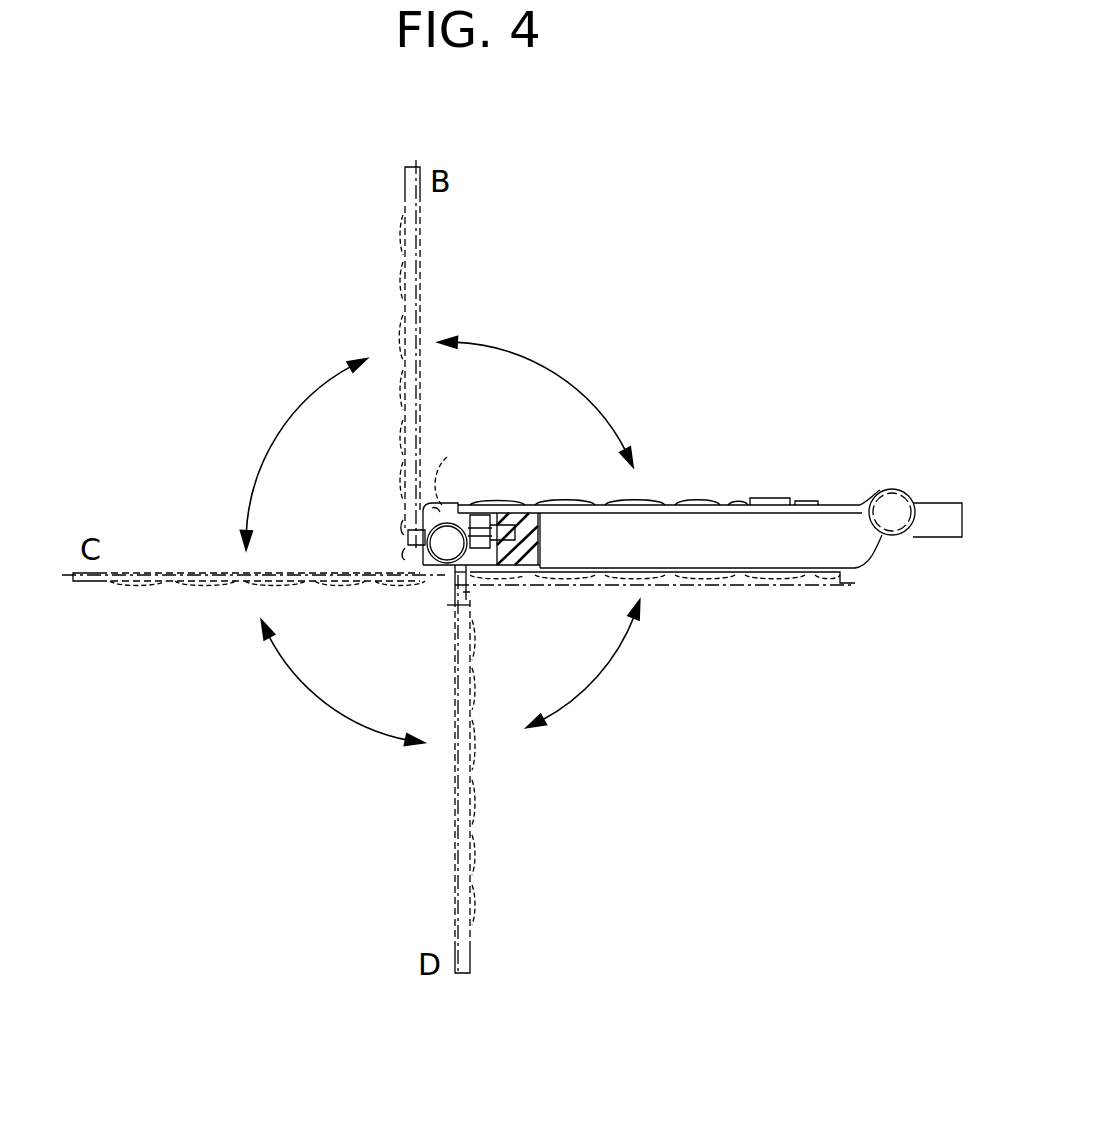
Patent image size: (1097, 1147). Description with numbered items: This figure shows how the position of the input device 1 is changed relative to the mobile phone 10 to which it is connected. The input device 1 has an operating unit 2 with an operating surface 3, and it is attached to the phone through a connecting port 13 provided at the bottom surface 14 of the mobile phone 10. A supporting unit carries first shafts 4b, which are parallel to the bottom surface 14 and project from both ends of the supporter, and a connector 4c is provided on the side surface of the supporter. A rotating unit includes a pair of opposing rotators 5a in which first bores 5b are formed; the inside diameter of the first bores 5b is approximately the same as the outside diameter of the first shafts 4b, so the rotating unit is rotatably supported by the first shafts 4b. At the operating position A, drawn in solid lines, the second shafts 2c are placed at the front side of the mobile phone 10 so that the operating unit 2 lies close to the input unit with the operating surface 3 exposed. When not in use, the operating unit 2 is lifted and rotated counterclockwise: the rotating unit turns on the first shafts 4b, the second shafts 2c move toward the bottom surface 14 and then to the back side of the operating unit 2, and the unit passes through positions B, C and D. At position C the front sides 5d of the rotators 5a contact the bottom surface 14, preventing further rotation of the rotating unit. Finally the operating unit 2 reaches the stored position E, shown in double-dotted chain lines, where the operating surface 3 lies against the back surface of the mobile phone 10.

The input device 1 is at (708, 532).
The operating unit 2 is at (738, 511).
The operating surface 3 is at (673, 492).
The mobile phone 10 is at (892, 568).
The second shafts 2c is at (446, 462).
The rotators 5a is at (450, 512).
The connector 4c is at (481, 530).
The front sides of the rotators 5d is at (423, 520).
The first bores 5b is at (441, 546).
The first shafts 4b is at (440, 561).
The bottom surface 14 is at (455, 566).
The connecting port 13 is at (481, 561).